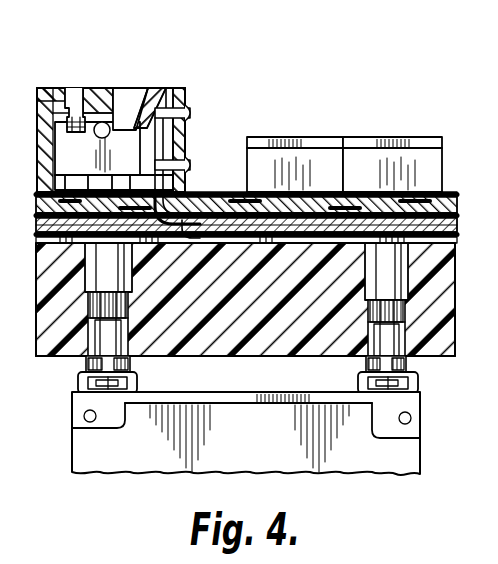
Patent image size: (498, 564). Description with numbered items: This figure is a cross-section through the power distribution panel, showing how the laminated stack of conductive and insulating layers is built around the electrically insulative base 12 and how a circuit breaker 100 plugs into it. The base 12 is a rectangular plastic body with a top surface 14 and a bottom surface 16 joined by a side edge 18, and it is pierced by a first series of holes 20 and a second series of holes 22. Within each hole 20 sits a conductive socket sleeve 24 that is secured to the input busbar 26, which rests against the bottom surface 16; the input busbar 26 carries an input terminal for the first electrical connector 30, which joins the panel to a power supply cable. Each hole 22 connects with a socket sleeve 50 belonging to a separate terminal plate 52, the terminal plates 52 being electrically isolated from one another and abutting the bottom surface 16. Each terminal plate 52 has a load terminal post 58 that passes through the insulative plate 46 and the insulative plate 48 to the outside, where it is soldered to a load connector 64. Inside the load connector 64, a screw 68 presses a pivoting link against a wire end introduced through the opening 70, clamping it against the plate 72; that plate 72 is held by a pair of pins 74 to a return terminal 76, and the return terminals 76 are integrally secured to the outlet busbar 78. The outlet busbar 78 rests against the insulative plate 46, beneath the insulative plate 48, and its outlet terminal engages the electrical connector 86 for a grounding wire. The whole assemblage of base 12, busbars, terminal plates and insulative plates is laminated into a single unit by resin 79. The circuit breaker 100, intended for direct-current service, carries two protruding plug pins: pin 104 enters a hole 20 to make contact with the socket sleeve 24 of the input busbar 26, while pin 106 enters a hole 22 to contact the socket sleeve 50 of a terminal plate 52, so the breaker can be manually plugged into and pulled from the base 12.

The electrically insulative base 12 is at (282, 356).
The top surface 14 is at (420, 374).
The bottom surface 16 is at (457, 239).
The side edge 18 is at (462, 358).
The first series of holes 20 is at (348, 360).
The second series of holes 22 is at (138, 358).
The socket sleeve 24 is at (440, 300).
The input busbar 26 is at (340, 232).
The first electrical connector 30 is at (410, 140).
The insulative plate 46 is at (455, 215).
The insulative plate 48 is at (450, 196).
The socket sleeve 50 is at (180, 358).
The terminal plate 52 is at (196, 166).
The load terminal post 58 is at (188, 196).
The load connector 64 is at (52, 88).
The screw 68 is at (80, 104).
The opening 70 is at (152, 114).
The plate 72 is at (134, 122).
The pins 74 is at (196, 112).
The return terminal 76 is at (174, 92).
The outlet busbar 78 is at (290, 212).
The resin 79 is at (457, 233).
The electrical connector 86 is at (280, 138).
The circuit breaker 100 is at (358, 478).
The pin 104 is at (432, 330).
The pin 106 is at (82, 357).